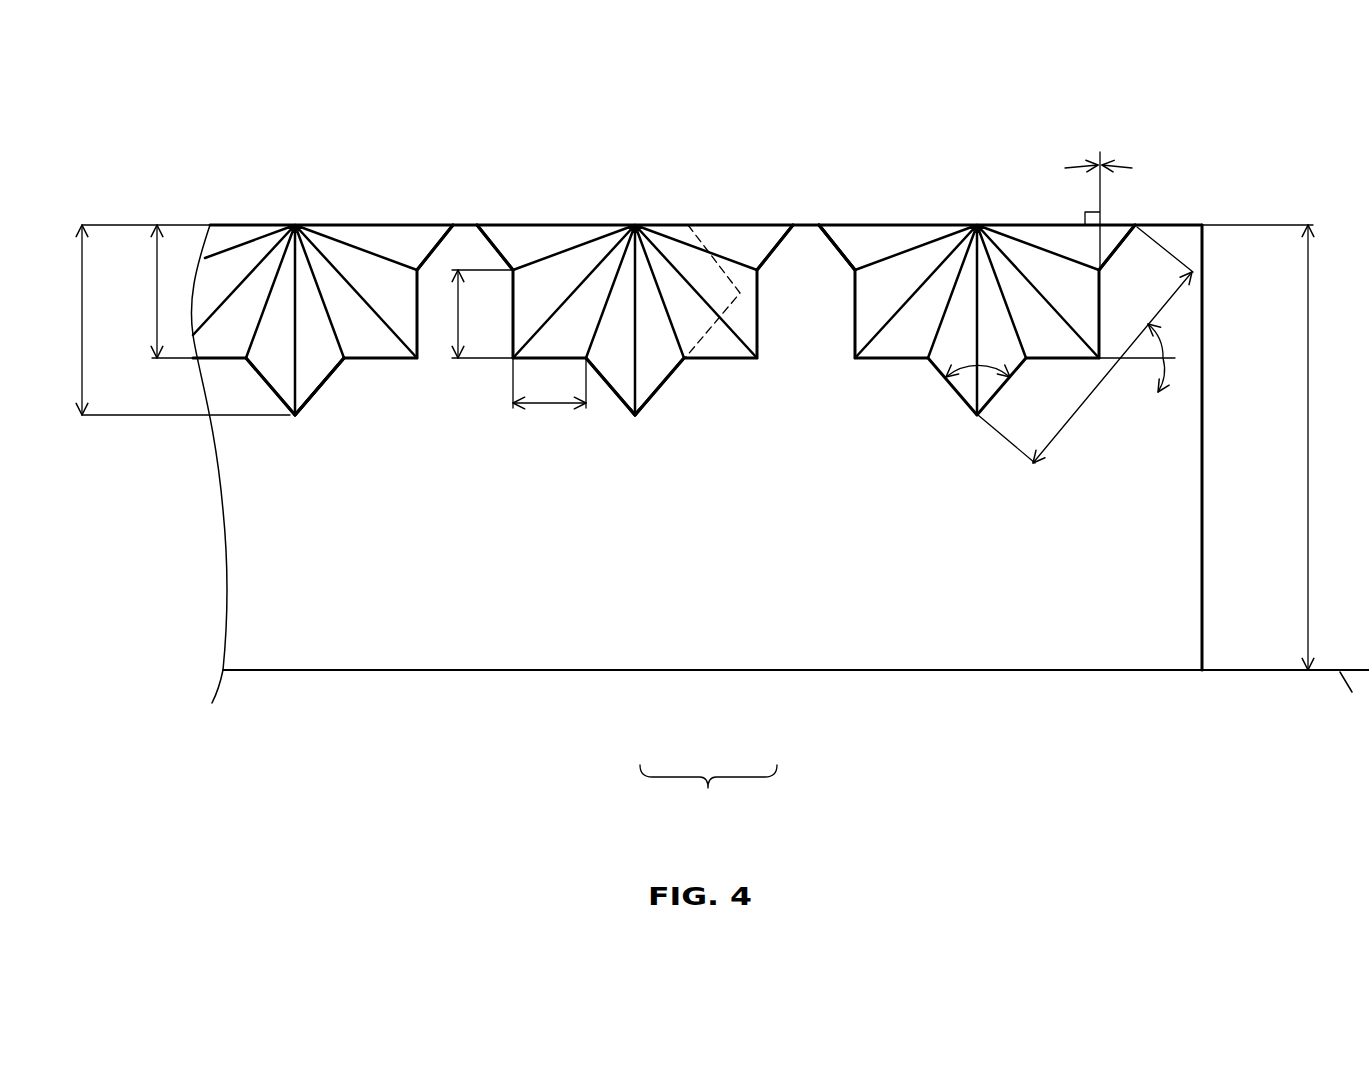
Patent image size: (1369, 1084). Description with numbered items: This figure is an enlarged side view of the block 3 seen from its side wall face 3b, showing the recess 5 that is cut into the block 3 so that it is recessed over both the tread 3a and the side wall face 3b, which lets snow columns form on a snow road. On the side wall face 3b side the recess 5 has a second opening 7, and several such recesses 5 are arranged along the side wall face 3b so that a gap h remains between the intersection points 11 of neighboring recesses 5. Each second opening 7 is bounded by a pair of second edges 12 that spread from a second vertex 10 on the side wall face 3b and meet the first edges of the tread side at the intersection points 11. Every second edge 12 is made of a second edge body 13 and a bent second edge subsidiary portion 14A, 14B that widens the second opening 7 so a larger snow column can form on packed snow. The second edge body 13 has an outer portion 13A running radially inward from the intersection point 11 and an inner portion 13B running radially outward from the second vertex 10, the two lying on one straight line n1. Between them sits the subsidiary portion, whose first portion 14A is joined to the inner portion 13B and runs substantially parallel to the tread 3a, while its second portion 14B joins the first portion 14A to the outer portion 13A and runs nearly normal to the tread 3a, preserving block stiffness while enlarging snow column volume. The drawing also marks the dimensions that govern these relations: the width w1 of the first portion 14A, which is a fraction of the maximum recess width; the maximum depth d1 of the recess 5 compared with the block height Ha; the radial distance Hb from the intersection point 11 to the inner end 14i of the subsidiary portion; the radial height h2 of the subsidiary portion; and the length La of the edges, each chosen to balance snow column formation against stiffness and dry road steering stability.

The block 3 is at (188, 185).
The tread 3a is at (1190, 224).
The side wall face 3b is at (1088, 622).
The recess 5 is at (1120, 210).
The second opening 7 is at (627, 433).
The second vertex 10 is at (293, 420).
The intersection point 11 is at (453, 225).
The second edge 12 is at (512, 317).
The second edge body 13 is at (835, 241).
The outer portion 13A is at (430, 253).
The inner portion 13B is at (317, 390).
The first portion 14A is at (722, 358).
The second portion 14B is at (757, 317).
The inner end 14i is at (245, 360).
The gap h is at (495, 170).
The height of the second edge subsidiary portion h2 is at (458, 317).
The straight line n1 is at (688, 223).
The maximum depth d1 is at (169, 320).
The distance Hb is at (152, 291).
The block height Ha is at (1276, 447).
The width of the first portion w1 is at (550, 405).
The length La is at (1060, 430).